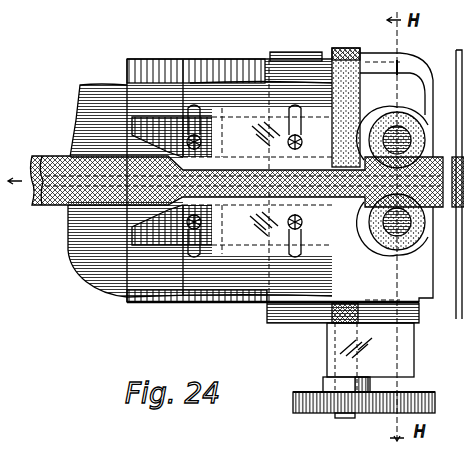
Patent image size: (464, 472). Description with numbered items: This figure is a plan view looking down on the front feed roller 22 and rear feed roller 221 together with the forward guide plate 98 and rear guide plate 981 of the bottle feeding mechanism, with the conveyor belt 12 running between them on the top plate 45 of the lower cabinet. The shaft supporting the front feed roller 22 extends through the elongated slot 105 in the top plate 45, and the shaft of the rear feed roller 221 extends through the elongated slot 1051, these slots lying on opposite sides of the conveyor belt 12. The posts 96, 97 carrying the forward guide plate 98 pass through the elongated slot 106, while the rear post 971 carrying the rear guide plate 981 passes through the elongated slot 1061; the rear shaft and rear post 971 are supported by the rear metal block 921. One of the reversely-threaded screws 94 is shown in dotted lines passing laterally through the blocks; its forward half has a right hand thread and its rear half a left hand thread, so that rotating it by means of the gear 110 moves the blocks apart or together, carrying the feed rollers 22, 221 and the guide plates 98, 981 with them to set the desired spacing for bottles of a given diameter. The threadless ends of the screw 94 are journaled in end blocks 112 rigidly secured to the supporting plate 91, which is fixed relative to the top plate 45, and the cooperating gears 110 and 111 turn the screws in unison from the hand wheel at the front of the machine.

The conveyor belt 12 is at (42, 210).
The front feed roller 22 is at (421, 286).
The rear feed roller 221 is at (419, 123).
The top plate 45 is at (78, 119).
The supporting plate 91 is at (290, 58).
The rear metal block 921 is at (216, 72).
The reversely-threaded screw 94 is at (347, 60).
The post 96 is at (202, 143).
The post 97 is at (282, 347).
The rear post 971 is at (363, 124).
The forward guide plate 98 is at (230, 238).
The rear guide plate 981 is at (238, 126).
The elongated slot 105 is at (419, 324).
The elongated slot 1051 is at (397, 68).
The elongated slot 106 is at (190, 228).
The elongated slot 1061 is at (187, 80).
The gear 110 is at (297, 402).
The gear 111 is at (436, 397).
The end block 112 is at (388, 378).